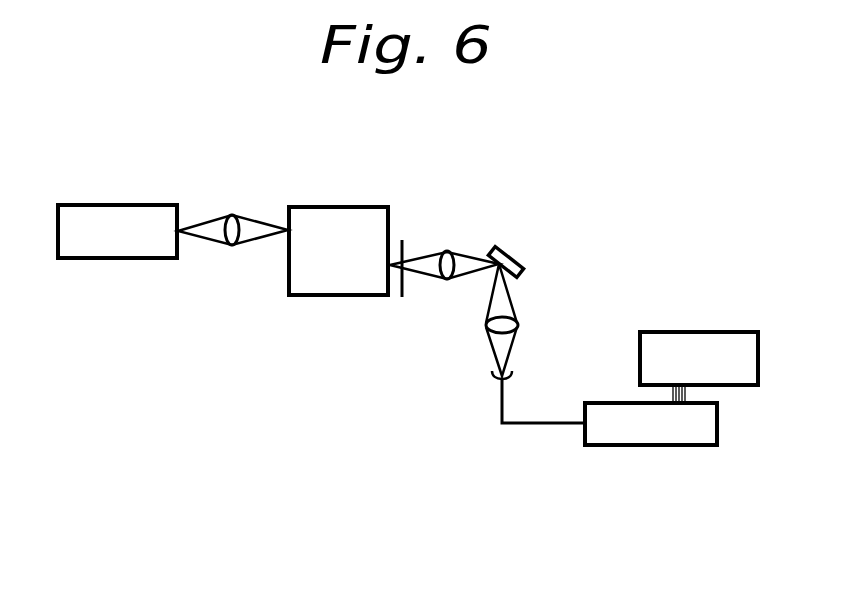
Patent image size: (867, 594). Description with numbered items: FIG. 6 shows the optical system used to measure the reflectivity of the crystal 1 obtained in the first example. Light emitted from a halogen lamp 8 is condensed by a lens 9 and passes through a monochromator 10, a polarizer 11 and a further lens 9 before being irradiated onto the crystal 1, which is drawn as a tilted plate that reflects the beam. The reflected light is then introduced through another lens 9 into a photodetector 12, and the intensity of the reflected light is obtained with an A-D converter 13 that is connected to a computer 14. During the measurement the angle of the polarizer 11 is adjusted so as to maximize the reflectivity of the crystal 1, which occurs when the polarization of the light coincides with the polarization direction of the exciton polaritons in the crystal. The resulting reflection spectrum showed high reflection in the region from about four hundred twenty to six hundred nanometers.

The crystal 1 is at (511, 250).
The halogen lamp 8 is at (77, 250).
The lens 9 is at (233, 250).
The monochromator 10 is at (330, 282).
The polarizer 11 is at (403, 285).
The photodetector 12 is at (492, 378).
The A-D converter 13 is at (708, 425).
The computer 14 is at (733, 340).